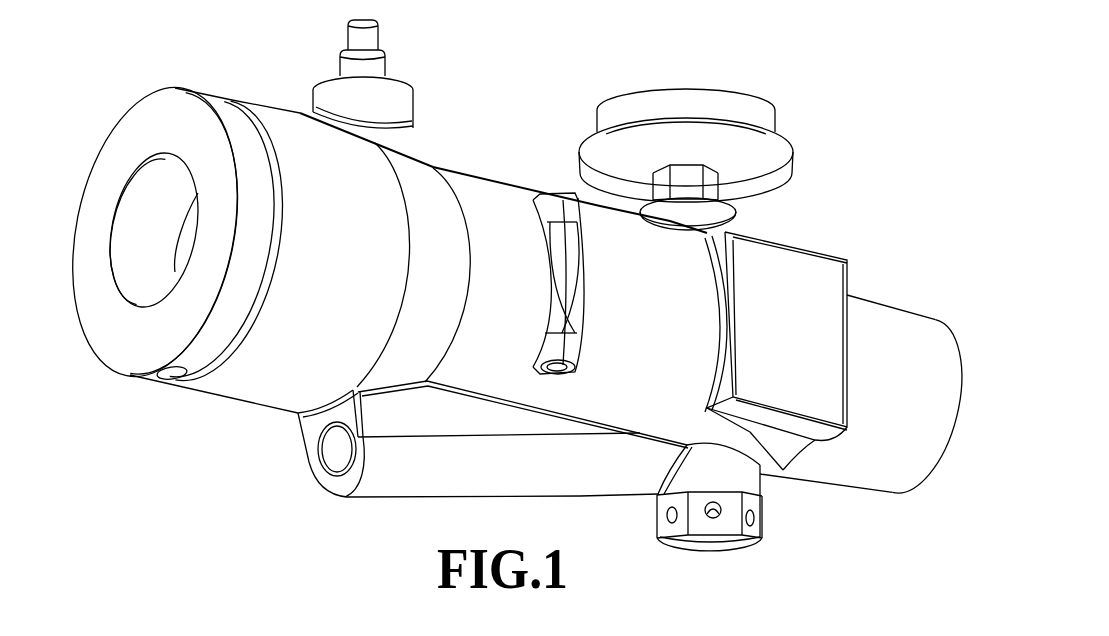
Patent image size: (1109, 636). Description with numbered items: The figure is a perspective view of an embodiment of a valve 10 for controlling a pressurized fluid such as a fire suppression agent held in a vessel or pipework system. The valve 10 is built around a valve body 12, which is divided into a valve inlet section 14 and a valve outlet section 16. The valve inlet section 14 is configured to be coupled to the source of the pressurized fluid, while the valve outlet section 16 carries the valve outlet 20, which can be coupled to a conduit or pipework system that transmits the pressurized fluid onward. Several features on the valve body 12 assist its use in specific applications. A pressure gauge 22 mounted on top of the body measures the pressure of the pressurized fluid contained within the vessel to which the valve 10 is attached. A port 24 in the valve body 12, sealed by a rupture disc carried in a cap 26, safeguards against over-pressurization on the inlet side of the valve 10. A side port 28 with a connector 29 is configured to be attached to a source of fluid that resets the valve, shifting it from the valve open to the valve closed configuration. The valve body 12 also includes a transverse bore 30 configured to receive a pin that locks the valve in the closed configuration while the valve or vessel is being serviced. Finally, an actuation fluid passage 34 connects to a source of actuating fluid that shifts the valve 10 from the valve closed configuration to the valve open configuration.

The valve 10 is at (872, 55).
The valve body 12 is at (500, 195).
The valve inlet section 14 is at (893, 323).
The valve outlet section 16 is at (233, 108).
The valve outlet 20 is at (160, 182).
The pressure gauge 22 is at (778, 148).
The port 24 is at (750, 478).
The cap 26 is at (720, 550).
The side port 28 is at (400, 140).
The connector 29 is at (378, 63).
The transverse bore 30 is at (553, 367).
The actuation fluid passage 34 is at (330, 457).